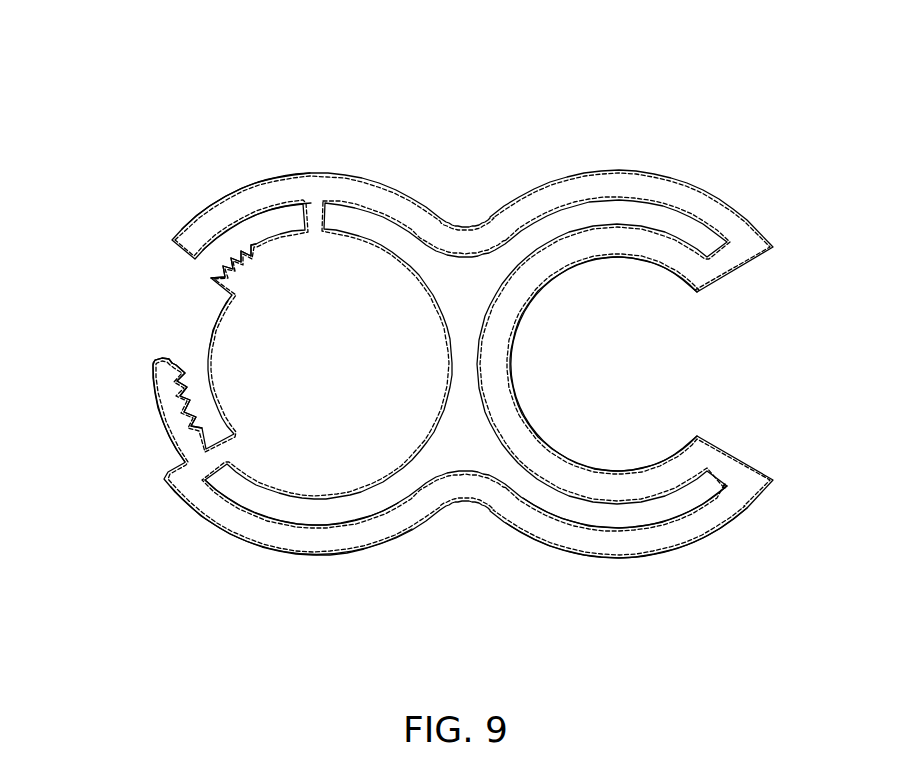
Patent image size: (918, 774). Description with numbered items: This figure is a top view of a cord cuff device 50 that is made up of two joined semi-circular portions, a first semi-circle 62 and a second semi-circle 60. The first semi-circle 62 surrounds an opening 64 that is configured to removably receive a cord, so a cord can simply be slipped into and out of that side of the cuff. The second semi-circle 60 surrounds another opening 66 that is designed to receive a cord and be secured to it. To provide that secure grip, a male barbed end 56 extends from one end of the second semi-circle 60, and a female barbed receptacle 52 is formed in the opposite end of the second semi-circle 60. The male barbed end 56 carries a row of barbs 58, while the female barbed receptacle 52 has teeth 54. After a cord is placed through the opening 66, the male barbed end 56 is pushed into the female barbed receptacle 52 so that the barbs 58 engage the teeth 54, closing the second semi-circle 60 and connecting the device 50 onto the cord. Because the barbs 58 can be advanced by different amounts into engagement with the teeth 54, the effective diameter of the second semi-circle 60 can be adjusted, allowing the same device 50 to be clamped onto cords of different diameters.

The device 50 is at (764, 82).
The female barbed receptacle 52 is at (228, 218).
The teeth 54 is at (209, 240).
The male barbed end 56 is at (172, 410).
The barbs 58 is at (195, 400).
The second semi-circle 60 is at (270, 503).
The first semi-circle 62 is at (622, 516).
The opening 64 is at (696, 362).
The opening 66 is at (200, 330).